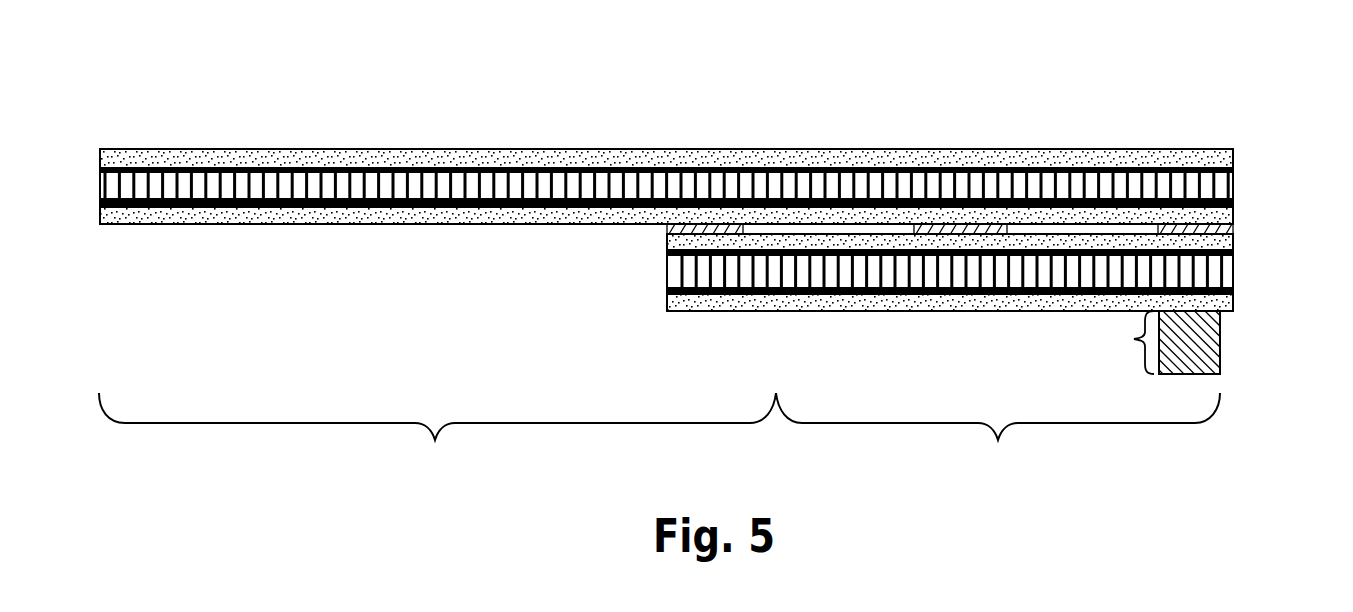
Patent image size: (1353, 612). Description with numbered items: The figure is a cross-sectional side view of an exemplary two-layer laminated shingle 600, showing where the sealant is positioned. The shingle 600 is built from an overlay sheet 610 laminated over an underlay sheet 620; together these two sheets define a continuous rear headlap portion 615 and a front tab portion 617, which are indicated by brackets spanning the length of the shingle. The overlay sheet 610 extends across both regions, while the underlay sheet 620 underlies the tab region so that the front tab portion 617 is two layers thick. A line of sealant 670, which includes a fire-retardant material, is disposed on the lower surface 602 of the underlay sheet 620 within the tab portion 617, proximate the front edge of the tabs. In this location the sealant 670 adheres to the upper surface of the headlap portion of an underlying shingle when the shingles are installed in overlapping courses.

The laminated shingle 600 is at (718, 210).
The overlay sheet 610 is at (1258, 179).
The underlay sheet 620 is at (1260, 267).
The lower surface of the underlay sheet 602 is at (1023, 311).
The line of sealant 670 is at (1220, 340).
The rear headlap portion 615 is at (437, 434).
The front tab portion 617 is at (998, 434).